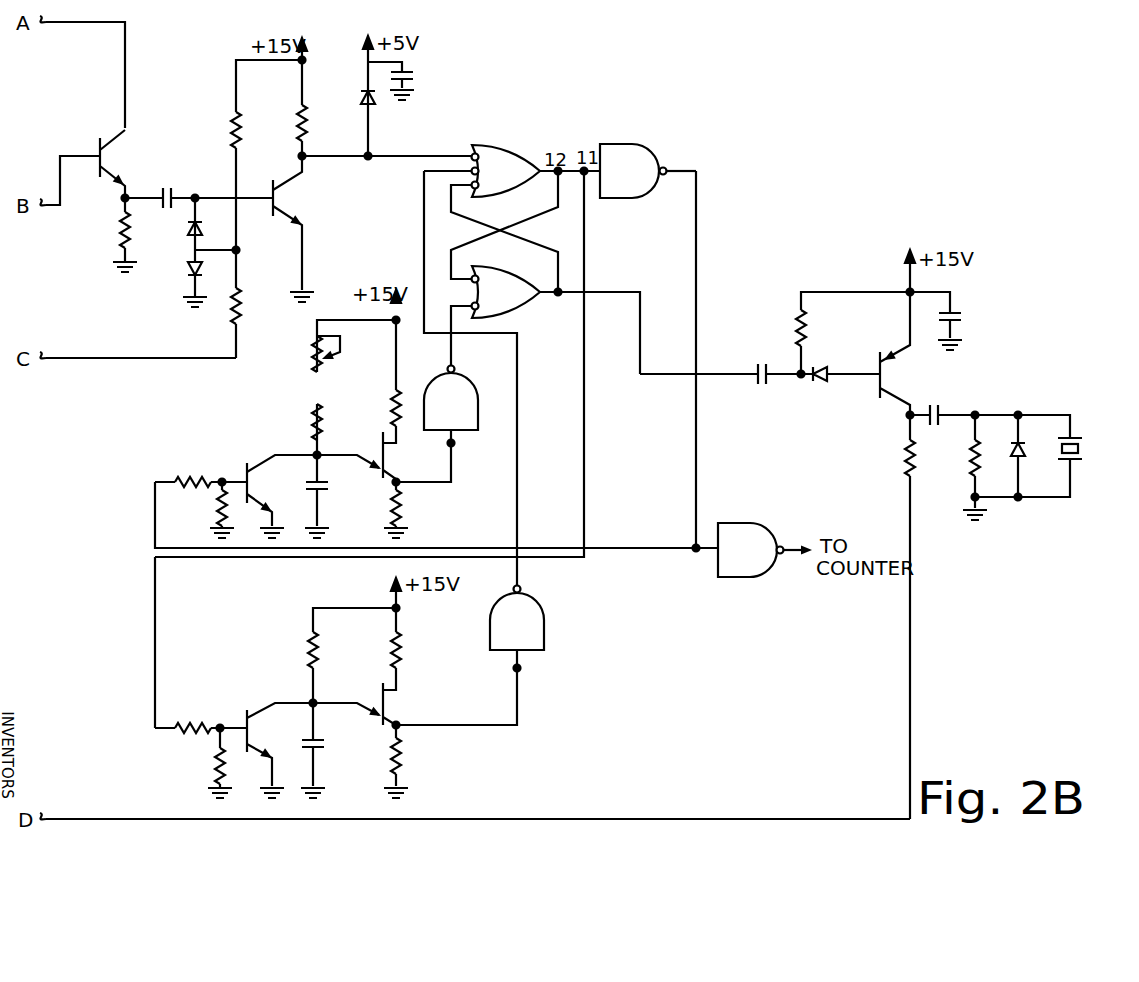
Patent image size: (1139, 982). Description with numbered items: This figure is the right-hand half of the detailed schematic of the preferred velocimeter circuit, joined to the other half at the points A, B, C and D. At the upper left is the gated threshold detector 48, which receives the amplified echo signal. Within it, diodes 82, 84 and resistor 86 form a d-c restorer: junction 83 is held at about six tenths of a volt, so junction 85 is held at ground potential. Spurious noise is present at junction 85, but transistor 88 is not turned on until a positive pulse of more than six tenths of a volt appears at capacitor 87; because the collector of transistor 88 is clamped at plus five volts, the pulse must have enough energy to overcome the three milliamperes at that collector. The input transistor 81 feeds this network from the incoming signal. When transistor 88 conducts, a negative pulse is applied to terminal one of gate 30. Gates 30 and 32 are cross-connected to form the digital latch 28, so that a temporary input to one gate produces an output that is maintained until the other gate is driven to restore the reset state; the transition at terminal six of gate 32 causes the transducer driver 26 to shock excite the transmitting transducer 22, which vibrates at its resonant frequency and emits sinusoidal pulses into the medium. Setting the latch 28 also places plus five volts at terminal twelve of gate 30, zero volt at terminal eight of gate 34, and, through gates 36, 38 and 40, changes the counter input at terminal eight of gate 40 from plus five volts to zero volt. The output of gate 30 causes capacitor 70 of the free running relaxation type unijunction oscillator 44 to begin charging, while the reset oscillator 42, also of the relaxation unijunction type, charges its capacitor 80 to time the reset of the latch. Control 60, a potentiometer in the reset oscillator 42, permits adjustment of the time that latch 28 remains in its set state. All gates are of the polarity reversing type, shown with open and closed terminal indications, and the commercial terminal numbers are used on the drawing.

The transmitting transducer 22 is at (1082, 447).
The transducer driver 26 is at (885, 540).
The latch 28 is at (553, 118).
The gate 30 is at (493, 142).
The gate 32 is at (509, 319).
The gate 34 is at (655, 143).
The gate 36 is at (478, 411).
The gate 38 is at (547, 601).
The gate 40 is at (742, 522).
The reset oscillator 42 is at (281, 428).
The free running oscillator 44 is at (281, 694).
The threshold detector 48 is at (220, 203).
The control 60 is at (320, 363).
The capacitor 70 is at (325, 742).
The capacitor 80 is at (324, 489).
The transistor 81 is at (104, 156).
The diode 82 is at (193, 232).
The junction 83 is at (197, 238).
The diode 84 is at (194, 277).
The junction 85 is at (194, 195).
The resistor 86 is at (239, 123).
The capacitor 87 is at (163, 195).
The transistor 88 is at (287, 195).